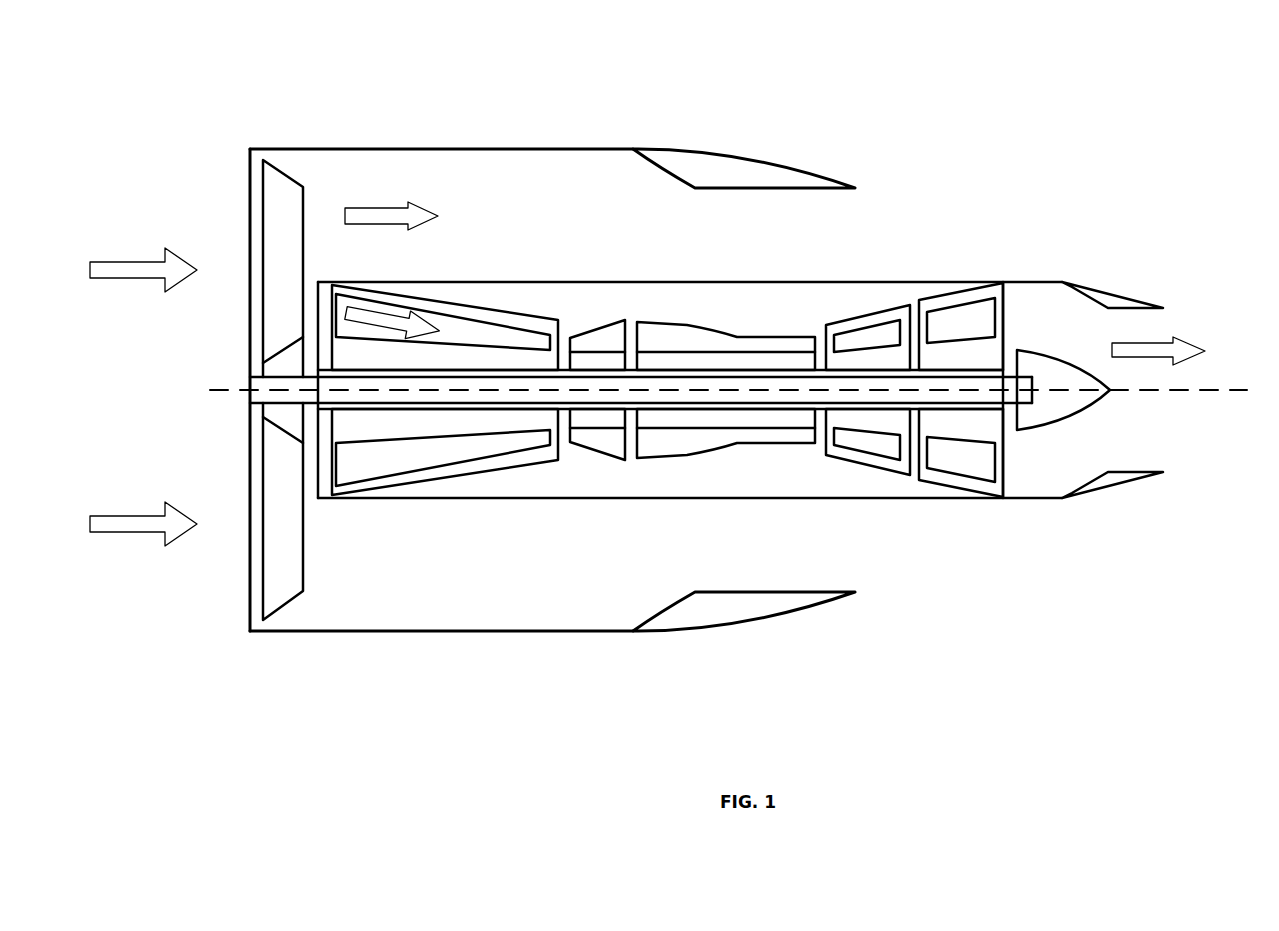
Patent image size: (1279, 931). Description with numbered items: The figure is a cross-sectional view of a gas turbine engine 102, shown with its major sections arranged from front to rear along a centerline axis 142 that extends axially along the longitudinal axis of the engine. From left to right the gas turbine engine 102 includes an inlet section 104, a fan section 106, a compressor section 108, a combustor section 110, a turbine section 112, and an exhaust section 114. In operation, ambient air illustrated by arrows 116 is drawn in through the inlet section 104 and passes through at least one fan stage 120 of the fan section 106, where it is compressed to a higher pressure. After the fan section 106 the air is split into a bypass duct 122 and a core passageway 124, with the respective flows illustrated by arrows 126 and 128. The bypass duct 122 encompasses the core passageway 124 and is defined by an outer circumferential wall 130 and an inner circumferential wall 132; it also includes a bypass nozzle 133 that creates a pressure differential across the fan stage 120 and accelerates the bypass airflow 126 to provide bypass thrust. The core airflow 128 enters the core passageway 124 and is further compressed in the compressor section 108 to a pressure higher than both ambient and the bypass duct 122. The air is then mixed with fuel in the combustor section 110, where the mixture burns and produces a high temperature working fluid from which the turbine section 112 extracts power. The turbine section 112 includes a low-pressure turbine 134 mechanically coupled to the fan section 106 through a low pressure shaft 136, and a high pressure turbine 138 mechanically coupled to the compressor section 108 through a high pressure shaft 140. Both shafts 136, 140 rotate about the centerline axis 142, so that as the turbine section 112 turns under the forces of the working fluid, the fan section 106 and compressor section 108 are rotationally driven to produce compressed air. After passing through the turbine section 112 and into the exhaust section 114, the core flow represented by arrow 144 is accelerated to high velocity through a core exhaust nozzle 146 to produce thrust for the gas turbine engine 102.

The gas turbine engine 102 is at (912, 105).
The inlet section 104 is at (391, 359).
The fan section 106 is at (288, 355).
The compressor section 108 is at (445, 301).
The combustor section 110 is at (724, 315).
The turbine section 112 is at (864, 360).
The exhaust section 114 is at (1153, 290).
The arrows (inlet air) 116 is at (110, 258).
The fan stage 120 is at (277, 192).
The bypass duct 122 is at (493, 163).
The core passageway 124 is at (445, 468).
The bypass airflow arrow 126 is at (372, 204).
The core airflow arrow 128 is at (362, 308).
The outer circumferential wall 130 is at (586, 147).
The inner circumferential wall 132 is at (600, 282).
The bypass nozzle 133 is at (790, 172).
The low-pressure turbine 134 is at (950, 315).
The low pressure shaft 136 is at (400, 405).
The high pressure turbine 138 is at (858, 340).
The high pressure shaft 140 is at (822, 417).
The centerline axis 142 is at (1232, 392).
The core flow arrow 144 is at (1177, 336).
The core exhaust nozzle 146 is at (1117, 480).